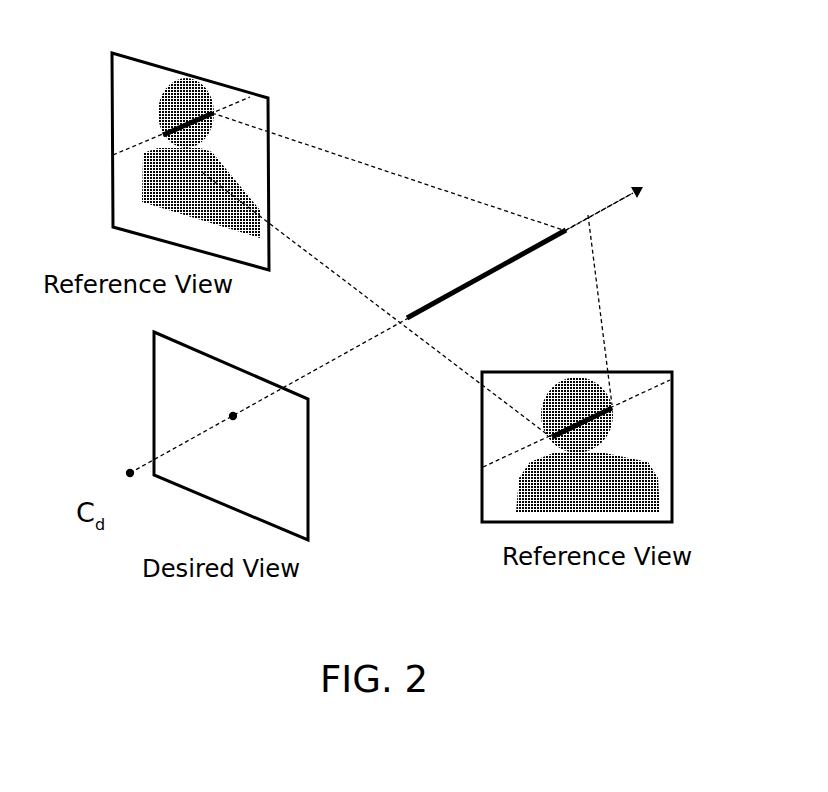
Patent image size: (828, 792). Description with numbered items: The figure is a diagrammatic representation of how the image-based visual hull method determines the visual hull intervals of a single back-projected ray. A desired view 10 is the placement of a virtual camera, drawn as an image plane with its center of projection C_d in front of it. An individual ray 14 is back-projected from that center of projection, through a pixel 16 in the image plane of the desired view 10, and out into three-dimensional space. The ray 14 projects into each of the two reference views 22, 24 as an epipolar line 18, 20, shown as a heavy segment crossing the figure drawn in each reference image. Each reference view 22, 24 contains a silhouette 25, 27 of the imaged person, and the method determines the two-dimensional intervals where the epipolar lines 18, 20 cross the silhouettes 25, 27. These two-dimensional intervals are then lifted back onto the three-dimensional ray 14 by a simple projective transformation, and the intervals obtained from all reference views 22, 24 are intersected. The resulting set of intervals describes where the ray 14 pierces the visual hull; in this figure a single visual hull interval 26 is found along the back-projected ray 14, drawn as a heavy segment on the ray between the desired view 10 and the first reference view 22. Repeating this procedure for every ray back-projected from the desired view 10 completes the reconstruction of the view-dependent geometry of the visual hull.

The desired view 10 is at (154, 381).
The ray 14 is at (602, 207).
The pixel 16 is at (237, 420).
The epipolar line 18 is at (163, 133).
The epipolar line 20 is at (575, 422).
The reference view 22 is at (270, 117).
The reference view 24 is at (653, 370).
The silhouette 25 is at (193, 83).
The visual hull interval 26 is at (490, 270).
The silhouette 27 is at (647, 475).